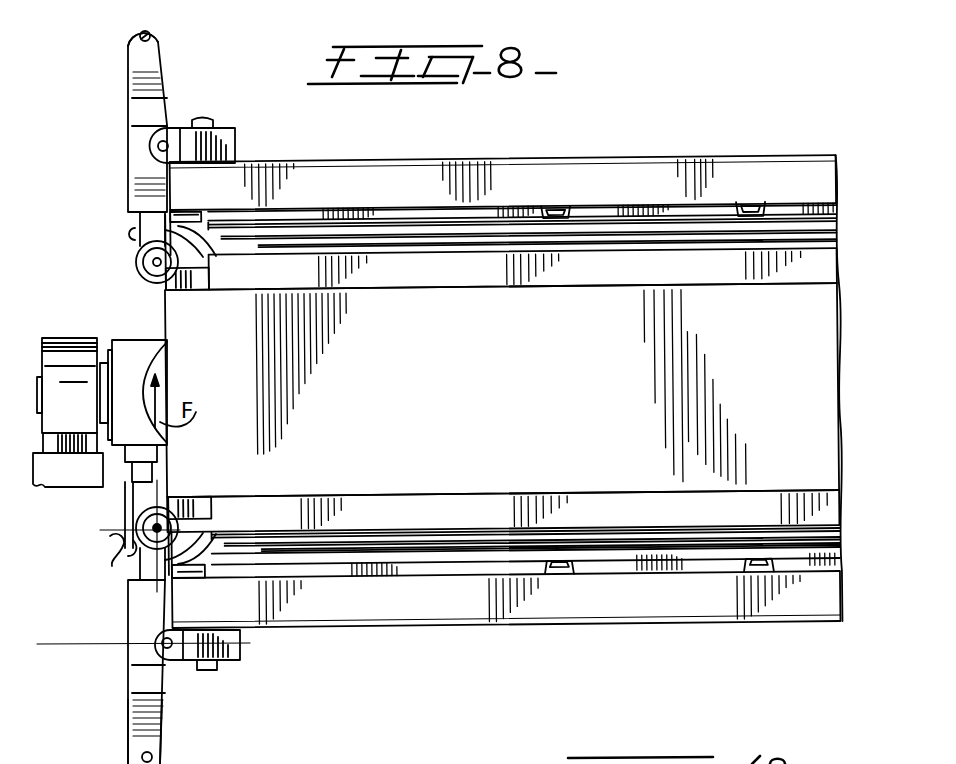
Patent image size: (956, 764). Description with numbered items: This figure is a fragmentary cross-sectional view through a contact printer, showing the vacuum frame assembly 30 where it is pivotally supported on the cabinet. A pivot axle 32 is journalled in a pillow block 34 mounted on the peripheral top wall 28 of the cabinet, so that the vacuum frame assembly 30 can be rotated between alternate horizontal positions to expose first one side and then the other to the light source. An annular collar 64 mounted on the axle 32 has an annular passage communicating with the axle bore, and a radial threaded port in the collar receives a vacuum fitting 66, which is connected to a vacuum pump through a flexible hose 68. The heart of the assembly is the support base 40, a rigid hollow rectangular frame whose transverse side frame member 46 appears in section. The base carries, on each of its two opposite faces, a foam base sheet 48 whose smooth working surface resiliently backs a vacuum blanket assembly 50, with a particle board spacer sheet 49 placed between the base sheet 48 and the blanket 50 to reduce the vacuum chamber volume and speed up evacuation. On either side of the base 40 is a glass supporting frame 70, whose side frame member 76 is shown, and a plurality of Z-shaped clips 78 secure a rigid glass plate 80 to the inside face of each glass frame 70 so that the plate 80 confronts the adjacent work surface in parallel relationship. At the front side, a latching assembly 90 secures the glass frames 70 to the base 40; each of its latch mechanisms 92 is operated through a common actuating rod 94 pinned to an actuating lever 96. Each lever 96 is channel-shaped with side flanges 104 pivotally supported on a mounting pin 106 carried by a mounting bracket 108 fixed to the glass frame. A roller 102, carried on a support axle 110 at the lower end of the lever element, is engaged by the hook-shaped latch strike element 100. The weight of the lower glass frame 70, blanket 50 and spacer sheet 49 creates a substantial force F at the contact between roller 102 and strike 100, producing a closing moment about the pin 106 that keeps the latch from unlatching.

The peripheral top wall 28 is at (38, 466).
The vacuum frame assembly 30 is at (72, 498).
The pivot axle 32 is at (37, 387).
The pillow block 34 is at (60, 338).
The support base 40 is at (703, 283).
The side frame member 46 is at (600, 371).
The base sheet 48 is at (395, 263).
The spacer sheet 49 is at (312, 250).
The vacuum blanket assembly 50 is at (362, 231).
The annular collar 64 is at (150, 340).
The vacuum fitting 66 is at (127, 470).
The flexible hose 68 is at (108, 540).
The glass supporting frame 70 is at (258, 161).
The side frame member 76 is at (600, 193).
The clip 78 is at (602, 556).
The glass plate 80 is at (298, 214).
The latching assembly 90 is at (122, 112).
The latch mechanism 92 is at (173, 126).
The actuating rod 94 is at (151, 33).
The actuating lever 96 is at (127, 54).
The latch strike element 100 is at (196, 260).
The roller 102 is at (156, 274).
The side flange 104 is at (150, 395).
The mounting pin 106 is at (158, 147).
The mounting bracket 108 is at (224, 148).
The support axle 110 is at (136, 262).